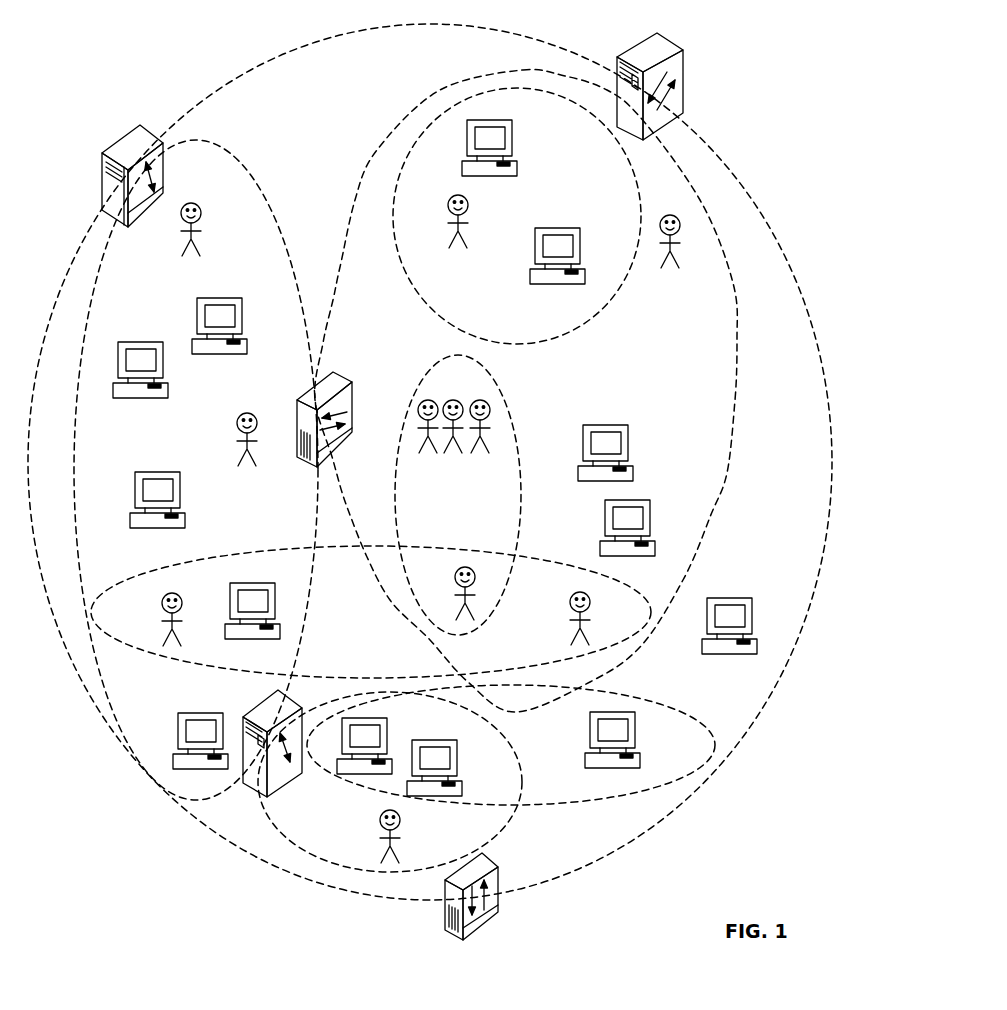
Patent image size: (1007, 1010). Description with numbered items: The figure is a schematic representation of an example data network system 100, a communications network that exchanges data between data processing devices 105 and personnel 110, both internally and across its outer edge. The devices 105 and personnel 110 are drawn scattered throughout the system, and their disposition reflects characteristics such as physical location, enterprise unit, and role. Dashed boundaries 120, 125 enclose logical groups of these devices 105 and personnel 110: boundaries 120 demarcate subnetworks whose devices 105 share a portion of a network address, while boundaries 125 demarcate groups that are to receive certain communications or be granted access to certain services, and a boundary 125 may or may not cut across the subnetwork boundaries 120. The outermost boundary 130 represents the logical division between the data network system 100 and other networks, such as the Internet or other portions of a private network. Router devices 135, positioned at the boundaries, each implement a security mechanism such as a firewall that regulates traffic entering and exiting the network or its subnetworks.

The data network system 100 is at (108, 70).
The data processing devices 105 is at (513, 143).
The personnel 110 is at (200, 228).
The boundaries 120 is at (253, 180).
The boundaries 125 is at (600, 320).
The boundary 130 is at (767, 692).
The router devices 135 is at (135, 143).